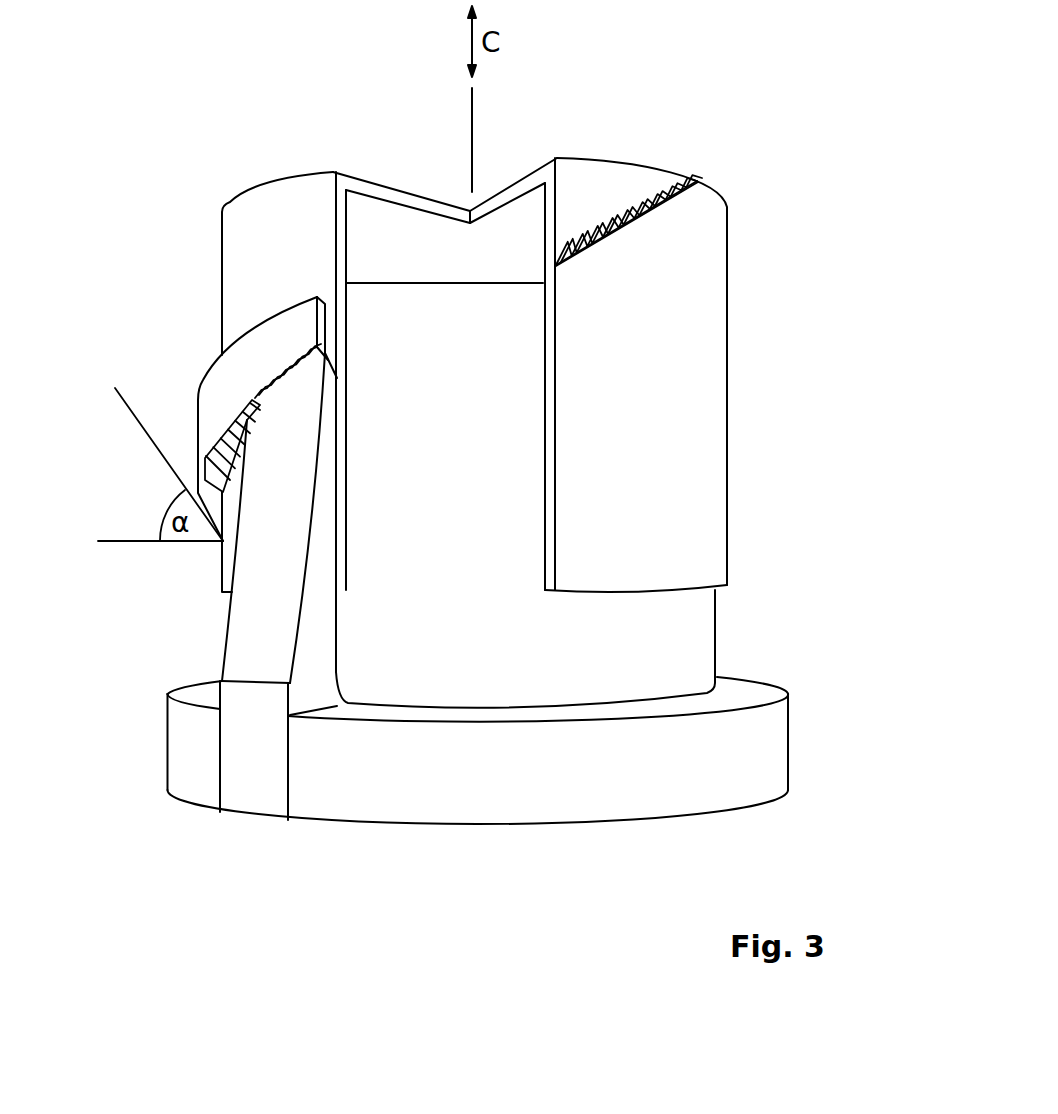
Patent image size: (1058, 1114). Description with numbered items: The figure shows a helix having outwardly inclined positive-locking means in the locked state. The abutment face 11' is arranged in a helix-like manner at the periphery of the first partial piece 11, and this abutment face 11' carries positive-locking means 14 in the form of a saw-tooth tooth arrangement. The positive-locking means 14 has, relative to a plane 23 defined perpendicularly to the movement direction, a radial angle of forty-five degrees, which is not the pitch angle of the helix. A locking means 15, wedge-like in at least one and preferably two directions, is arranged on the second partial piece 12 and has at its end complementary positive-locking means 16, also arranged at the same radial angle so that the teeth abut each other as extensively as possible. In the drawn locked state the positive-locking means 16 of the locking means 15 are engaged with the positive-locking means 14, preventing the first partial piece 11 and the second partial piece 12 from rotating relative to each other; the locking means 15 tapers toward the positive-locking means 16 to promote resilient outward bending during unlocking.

The first partial piece 11 is at (533, 415).
The abutment face 11' is at (630, 142).
The second partial piece 12 is at (595, 773).
The positive-locking means 14 is at (643, 236).
The locking means 15 is at (245, 841).
The positive-locking means 16 is at (260, 392).
The plane 23 is at (138, 541).